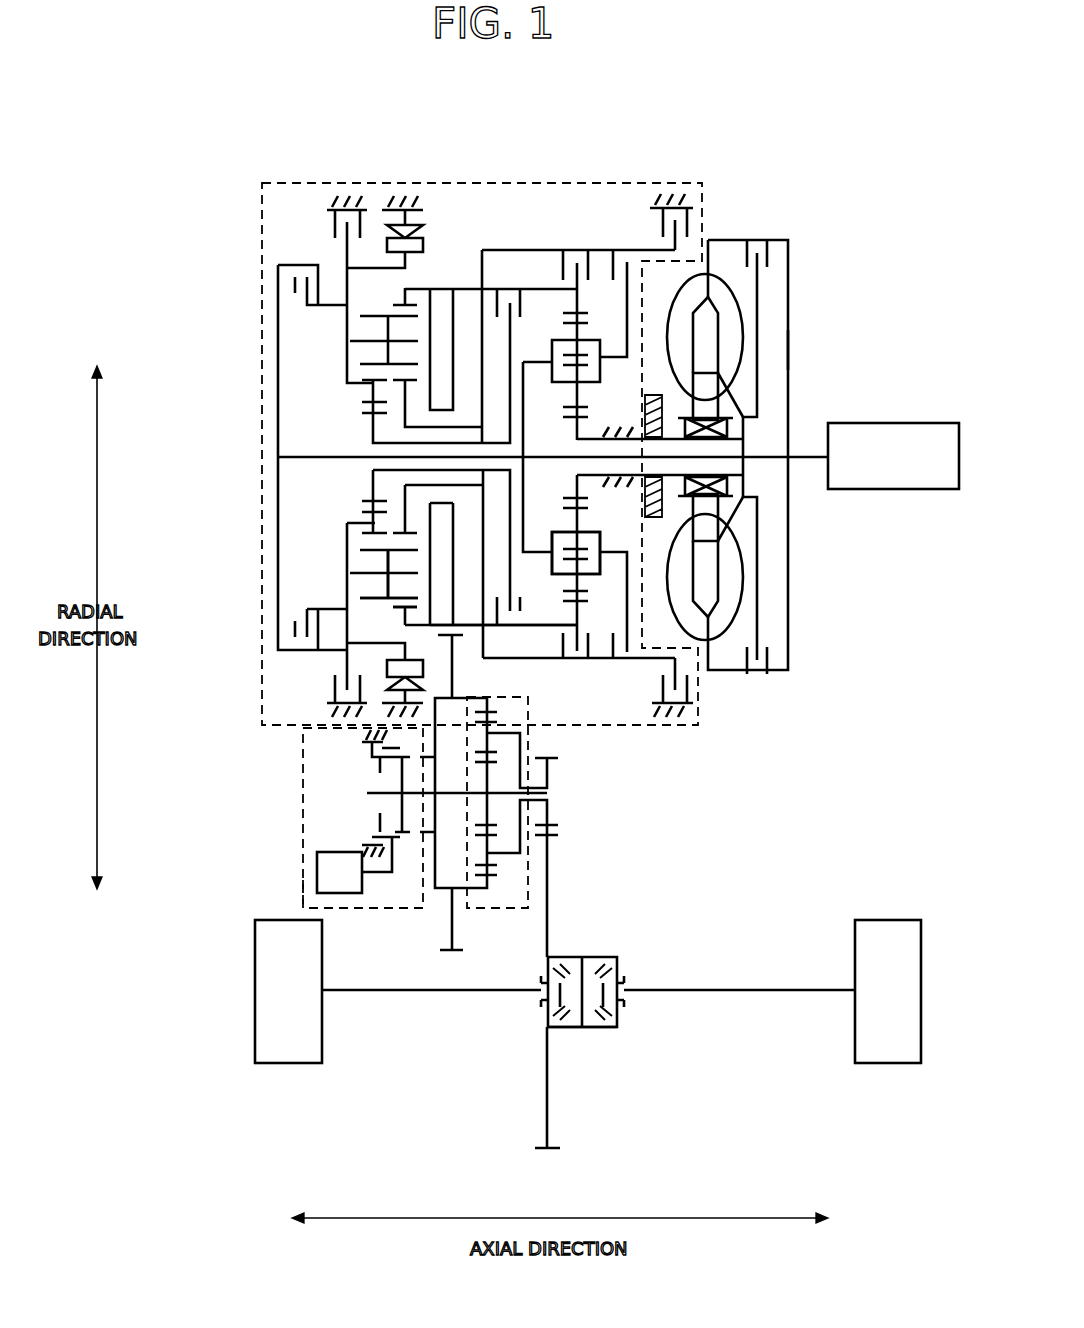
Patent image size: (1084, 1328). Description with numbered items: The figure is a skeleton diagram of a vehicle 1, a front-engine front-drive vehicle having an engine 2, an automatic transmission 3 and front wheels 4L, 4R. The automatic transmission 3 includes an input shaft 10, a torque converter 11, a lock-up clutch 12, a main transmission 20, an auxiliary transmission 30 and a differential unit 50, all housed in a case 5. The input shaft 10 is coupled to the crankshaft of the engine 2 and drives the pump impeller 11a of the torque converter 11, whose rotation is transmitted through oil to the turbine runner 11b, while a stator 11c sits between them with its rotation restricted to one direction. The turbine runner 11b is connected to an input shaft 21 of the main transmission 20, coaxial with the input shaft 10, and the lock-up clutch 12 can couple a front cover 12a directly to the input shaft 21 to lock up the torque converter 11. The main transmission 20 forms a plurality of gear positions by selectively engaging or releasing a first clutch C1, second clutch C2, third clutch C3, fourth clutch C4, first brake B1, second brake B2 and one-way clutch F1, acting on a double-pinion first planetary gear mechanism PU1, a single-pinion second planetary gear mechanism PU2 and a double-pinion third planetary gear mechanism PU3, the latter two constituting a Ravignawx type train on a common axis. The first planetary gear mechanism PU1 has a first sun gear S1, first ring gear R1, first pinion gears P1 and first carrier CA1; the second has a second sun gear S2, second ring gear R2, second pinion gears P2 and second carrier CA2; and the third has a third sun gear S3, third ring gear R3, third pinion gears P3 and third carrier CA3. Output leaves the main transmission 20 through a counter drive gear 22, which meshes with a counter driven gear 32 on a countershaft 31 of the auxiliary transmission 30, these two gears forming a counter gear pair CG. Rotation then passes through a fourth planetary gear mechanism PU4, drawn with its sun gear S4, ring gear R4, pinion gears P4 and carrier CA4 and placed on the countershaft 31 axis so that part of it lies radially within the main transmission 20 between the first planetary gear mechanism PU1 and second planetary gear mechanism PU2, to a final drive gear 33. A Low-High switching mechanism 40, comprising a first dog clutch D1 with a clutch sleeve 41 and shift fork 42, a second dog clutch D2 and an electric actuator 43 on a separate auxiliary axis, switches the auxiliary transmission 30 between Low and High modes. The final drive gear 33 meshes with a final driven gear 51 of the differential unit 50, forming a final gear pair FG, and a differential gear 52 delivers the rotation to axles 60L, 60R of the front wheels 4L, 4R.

The vehicle 1 is at (866, 156).
The engine 2 is at (930, 422).
The automatic transmission 3 is at (566, 181).
The front wheel 4L is at (290, 1065).
The front wheel 4R is at (890, 1065).
The case 5 is at (684, 208).
The input shaft 10 is at (812, 462).
The torque converter 11 is at (710, 221).
The pump impeller 11a is at (692, 289).
The turbine runner 11b is at (728, 318).
The stator 11c is at (708, 392).
The lock-up clutch 12 is at (757, 220).
The front cover 12a is at (790, 348).
The main transmission 20 is at (262, 210).
The input shaft 21 is at (550, 462).
The counter drive gear 22 is at (455, 620).
The auxiliary transmission 30 is at (282, 768).
The countershaft 31 is at (455, 797).
The counter driven gear 32 is at (458, 637).
The final drive gear 33 is at (558, 824).
The Low-High switching mechanism 40 is at (303, 893).
The clutch sleeve 41 is at (372, 836).
The shift fork 42 is at (393, 874).
The electric actuator 43 is at (317, 864).
The differential unit 50 is at (597, 956).
The final driven gear 51 is at (552, 845).
The differential gear 52 is at (598, 1028).
The axle 60L is at (500, 992).
The axle 60R is at (706, 992).
The first brake B1 is at (663, 220).
The second brake B2 is at (335, 220).
The first clutch C1 is at (486, 300).
The second clutch C2 is at (328, 268).
The third clutch C3 is at (563, 260).
The fourth clutch C4 is at (752, 257).
The one-way clutch F1 is at (405, 262).
The first carrier CA1 is at (605, 350).
The second carrier CA2 is at (350, 339).
The third carrier CA3 is at (382, 456).
The fourth carrier CA4 is at (520, 771).
The counter gear pair CG is at (436, 631).
The first dog clutch D1 is at (372, 818).
The second dog clutch D2 is at (414, 838).
The final gear pair FG is at (557, 840).
The first pinion gears P1 is at (562, 333).
The second pinion gears P2 is at (386, 315).
The third pinion gears P3 is at (365, 402).
The fourth pinion gear P4 is at (497, 726).
The first planetary gear mechanism PU1 is at (540, 636).
The second planetary gear mechanism PU2 is at (389, 619).
The third planetary gear mechanism PU3 is at (331, 527).
The fourth planetary gear mechanism PU4 is at (528, 900).
The first ring gear R1 is at (592, 308).
The second ring gear R2 is at (415, 302).
The third ring gear R3 is at (485, 456).
The fourth ring gear R4 is at (497, 711).
The first sun gear S1 is at (565, 418).
The second sun gear S2 is at (372, 384).
The third sun gear S3 is at (365, 414).
The fourth sun gear S4 is at (478, 770).